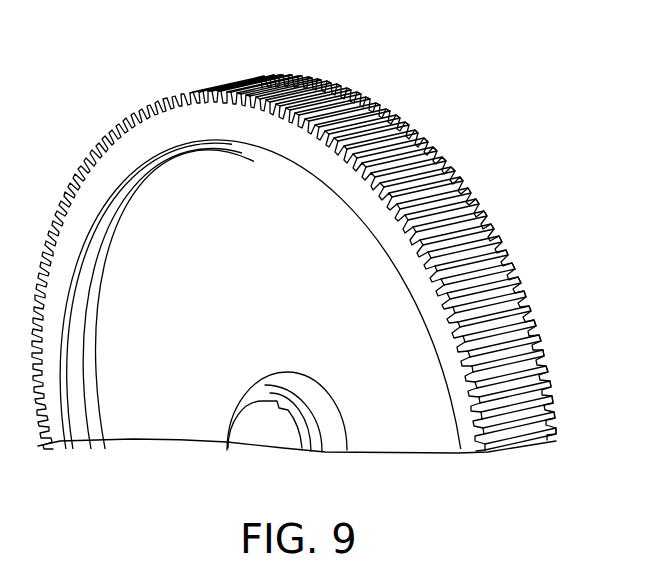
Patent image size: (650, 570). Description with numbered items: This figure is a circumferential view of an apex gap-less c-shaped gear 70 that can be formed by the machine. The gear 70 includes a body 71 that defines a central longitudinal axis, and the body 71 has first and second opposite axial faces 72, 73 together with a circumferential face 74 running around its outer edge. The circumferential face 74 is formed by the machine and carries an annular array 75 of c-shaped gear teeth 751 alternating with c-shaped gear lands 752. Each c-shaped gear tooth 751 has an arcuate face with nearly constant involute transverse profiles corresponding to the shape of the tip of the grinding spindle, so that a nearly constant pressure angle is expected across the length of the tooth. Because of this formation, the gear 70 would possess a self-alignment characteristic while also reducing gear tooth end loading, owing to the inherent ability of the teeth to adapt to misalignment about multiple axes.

The gear 70 is at (137, 445).
The body 71 is at (380, 437).
The first axial face 72 is at (269, 291).
The second axial face 73 is at (527, 292).
The circumferential face 74 is at (527, 430).
The annular array 75 is at (298, 63).
The c-shaped gear tooth 751 is at (413, 139).
The c-shaped gear land 752 is at (500, 254).